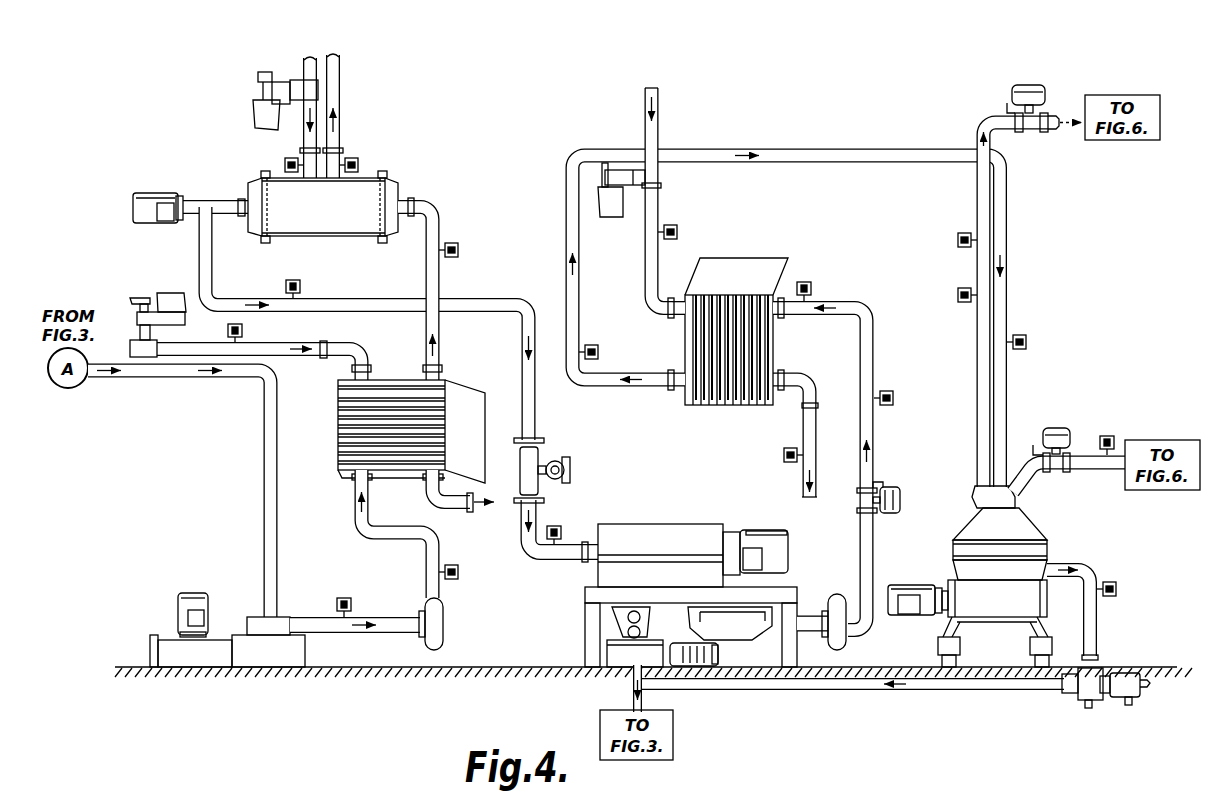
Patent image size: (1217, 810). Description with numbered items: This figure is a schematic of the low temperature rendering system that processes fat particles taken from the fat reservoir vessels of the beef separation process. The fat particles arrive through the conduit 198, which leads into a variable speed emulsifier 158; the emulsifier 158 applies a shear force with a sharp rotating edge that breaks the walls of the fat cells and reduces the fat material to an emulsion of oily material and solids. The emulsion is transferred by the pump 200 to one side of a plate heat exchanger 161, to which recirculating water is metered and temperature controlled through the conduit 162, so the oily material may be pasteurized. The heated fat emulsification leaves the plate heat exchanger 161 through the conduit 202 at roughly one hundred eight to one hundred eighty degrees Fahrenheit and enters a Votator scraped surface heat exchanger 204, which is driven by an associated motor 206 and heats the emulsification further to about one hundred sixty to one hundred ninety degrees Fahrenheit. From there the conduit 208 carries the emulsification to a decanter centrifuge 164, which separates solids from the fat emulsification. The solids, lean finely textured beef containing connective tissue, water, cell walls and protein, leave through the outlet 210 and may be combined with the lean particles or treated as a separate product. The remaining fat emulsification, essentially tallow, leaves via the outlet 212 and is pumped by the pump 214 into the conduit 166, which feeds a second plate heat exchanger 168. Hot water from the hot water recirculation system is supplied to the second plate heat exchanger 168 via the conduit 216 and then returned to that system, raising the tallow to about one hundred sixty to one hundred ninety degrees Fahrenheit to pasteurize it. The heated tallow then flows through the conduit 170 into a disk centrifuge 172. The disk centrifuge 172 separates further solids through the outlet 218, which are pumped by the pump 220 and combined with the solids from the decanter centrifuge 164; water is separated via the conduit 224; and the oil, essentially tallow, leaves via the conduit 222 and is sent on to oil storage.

The variable speed emulsifier 158 is at (282, 617).
The plate heat exchanger 161 is at (338, 450).
The conduit 162 is at (360, 350).
The decanter centrifuge 164 is at (660, 524).
The conduit 166 is at (858, 546).
The second plate heat exchanger 168 is at (748, 262).
The conduit 170 is at (627, 386).
The disk centrifuge 172 is at (1033, 517).
The conduit 198 is at (166, 379).
The pump 200 is at (445, 615).
The conduit 202 is at (440, 272).
The Votator scraped surface heat exchanger 204 is at (368, 177).
The motor 206 is at (147, 193).
The conduit 208 is at (199, 256).
The outlet 210 is at (632, 698).
The outlet 212 is at (732, 627).
The pump 214 is at (850, 642).
The conduit 216 is at (660, 126).
The outlet 218 is at (1098, 566).
The pump 220 is at (1143, 700).
The conduit 222 is at (977, 398).
The conduit 224 is at (1085, 456).